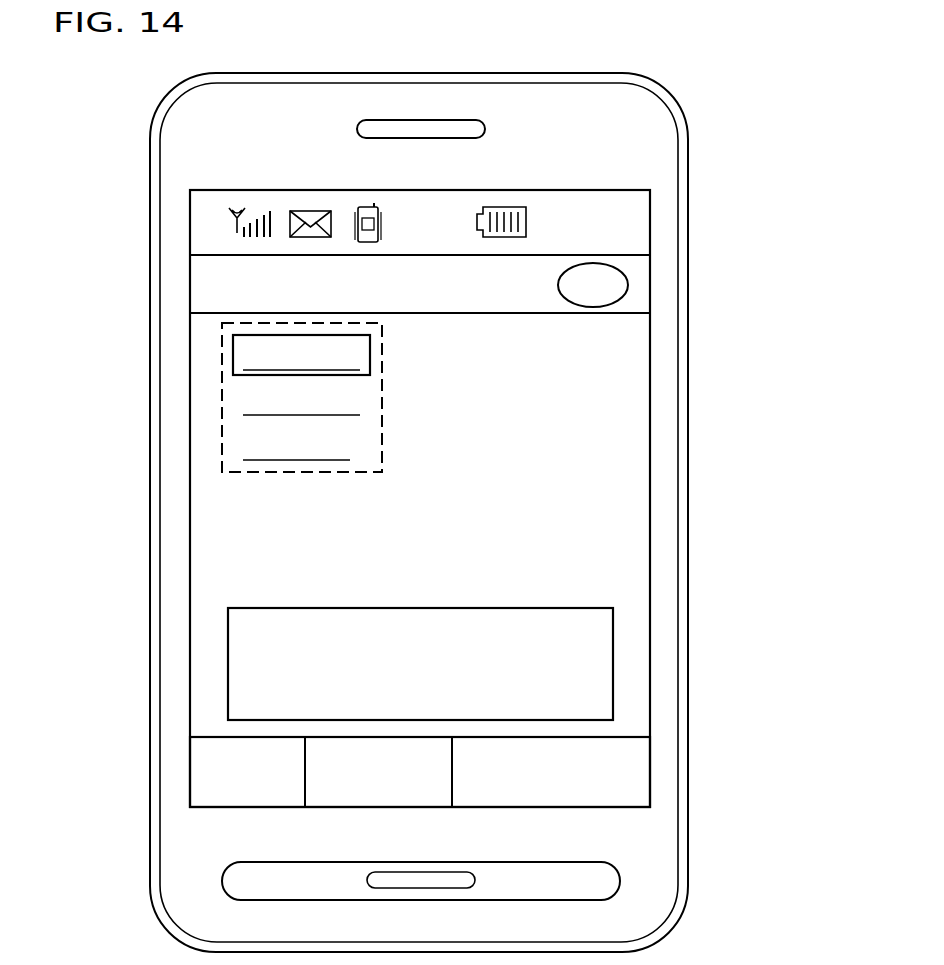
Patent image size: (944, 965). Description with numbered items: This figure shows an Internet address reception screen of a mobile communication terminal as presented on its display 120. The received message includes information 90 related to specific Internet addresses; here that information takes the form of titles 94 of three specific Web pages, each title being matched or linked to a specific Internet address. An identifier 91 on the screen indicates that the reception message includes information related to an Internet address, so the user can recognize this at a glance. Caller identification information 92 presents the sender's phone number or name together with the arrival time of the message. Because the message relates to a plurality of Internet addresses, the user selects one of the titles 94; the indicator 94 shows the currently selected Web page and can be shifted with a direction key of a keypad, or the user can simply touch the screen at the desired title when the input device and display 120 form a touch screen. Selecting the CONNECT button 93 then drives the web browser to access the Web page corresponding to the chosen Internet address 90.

The display 120 is at (650, 423).
The identifier 91 is at (628, 285).
The information corresponding to the specific Internet address 90 is at (222, 430).
The titles of specific Web pages 94 is at (233, 352).
The caller identification information 92 is at (613, 670).
The CONNECT button 93 is at (633, 768).